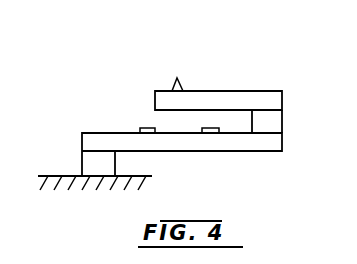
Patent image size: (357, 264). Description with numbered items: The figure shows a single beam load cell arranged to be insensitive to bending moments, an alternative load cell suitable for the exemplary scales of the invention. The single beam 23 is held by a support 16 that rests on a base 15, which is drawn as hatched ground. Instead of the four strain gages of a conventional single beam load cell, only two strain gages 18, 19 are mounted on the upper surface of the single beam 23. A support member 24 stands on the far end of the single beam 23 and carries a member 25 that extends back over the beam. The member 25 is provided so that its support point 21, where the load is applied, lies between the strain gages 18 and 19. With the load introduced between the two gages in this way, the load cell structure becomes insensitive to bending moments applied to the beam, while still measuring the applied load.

The base 15 is at (90, 178).
The support 16 is at (81, 161).
The strain gage 18 is at (140, 127).
The strain gage 19 is at (212, 134).
The support point 21 is at (181, 83).
The single beam 23 is at (178, 143).
The support member 24 is at (275, 125).
The member 25 is at (245, 102).